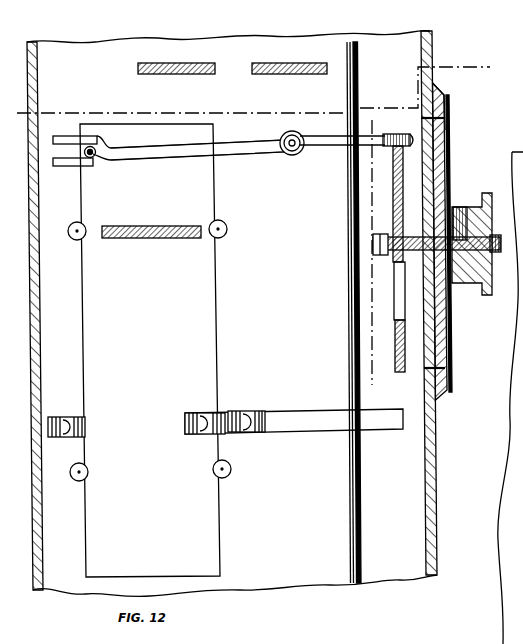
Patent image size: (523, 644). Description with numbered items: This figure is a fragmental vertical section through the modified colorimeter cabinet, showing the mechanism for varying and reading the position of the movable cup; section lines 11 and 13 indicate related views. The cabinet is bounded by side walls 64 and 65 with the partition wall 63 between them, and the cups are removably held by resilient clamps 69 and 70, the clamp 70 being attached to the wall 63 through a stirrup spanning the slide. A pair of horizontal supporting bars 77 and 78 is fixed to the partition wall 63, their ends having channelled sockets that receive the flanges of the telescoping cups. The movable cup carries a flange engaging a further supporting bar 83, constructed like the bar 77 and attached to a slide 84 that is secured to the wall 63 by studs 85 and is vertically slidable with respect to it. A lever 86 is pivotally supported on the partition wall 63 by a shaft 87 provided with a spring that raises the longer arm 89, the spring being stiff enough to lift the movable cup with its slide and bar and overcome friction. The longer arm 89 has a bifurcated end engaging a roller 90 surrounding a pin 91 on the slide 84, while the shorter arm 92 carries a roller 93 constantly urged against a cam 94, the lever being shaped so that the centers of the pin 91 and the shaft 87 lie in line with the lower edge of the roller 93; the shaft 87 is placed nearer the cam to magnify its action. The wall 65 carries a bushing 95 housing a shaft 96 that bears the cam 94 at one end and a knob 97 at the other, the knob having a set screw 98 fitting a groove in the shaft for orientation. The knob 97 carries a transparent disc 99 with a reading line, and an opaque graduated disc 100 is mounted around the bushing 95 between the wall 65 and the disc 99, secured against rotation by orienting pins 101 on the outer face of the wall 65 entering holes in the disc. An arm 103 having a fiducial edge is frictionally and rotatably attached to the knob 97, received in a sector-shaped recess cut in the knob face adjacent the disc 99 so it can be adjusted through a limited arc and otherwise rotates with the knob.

The section line 11- 11 is at (22, 106).
The section line 13- 13 is at (374, 127).
The partition wall 63 is at (241, 34).
The side wall 64 is at (41, 523).
The side wall 65 is at (437, 423).
The resilient clamp 69 is at (247, 412).
The resilient clamp 70 is at (59, 417).
The horizontal supporting bar 77 is at (294, 63).
The horizontal supporting bar 78 is at (186, 63).
The supporting bar 83 is at (168, 225).
The slide 84 is at (215, 307).
The stud 85 is at (71, 223).
The lever 86 is at (244, 153).
The shaft 87 is at (292, 133).
The longer arm 89 is at (180, 146).
The roller 90 is at (94, 160).
The pin 91 is at (94, 149).
The shorter arm 92 is at (348, 146).
The roller 93 is at (393, 148).
The cam 94 is at (396, 345).
The bushing 95 is at (425, 236).
The shaft 96 is at (497, 250).
The knob 97 is at (490, 193).
The set screw 98 is at (473, 207).
The transparent disc 99 is at (447, 331).
The graduated disc 100 is at (439, 89).
The orienting pin 101 is at (420, 118).
The arm 103 is at (450, 115).